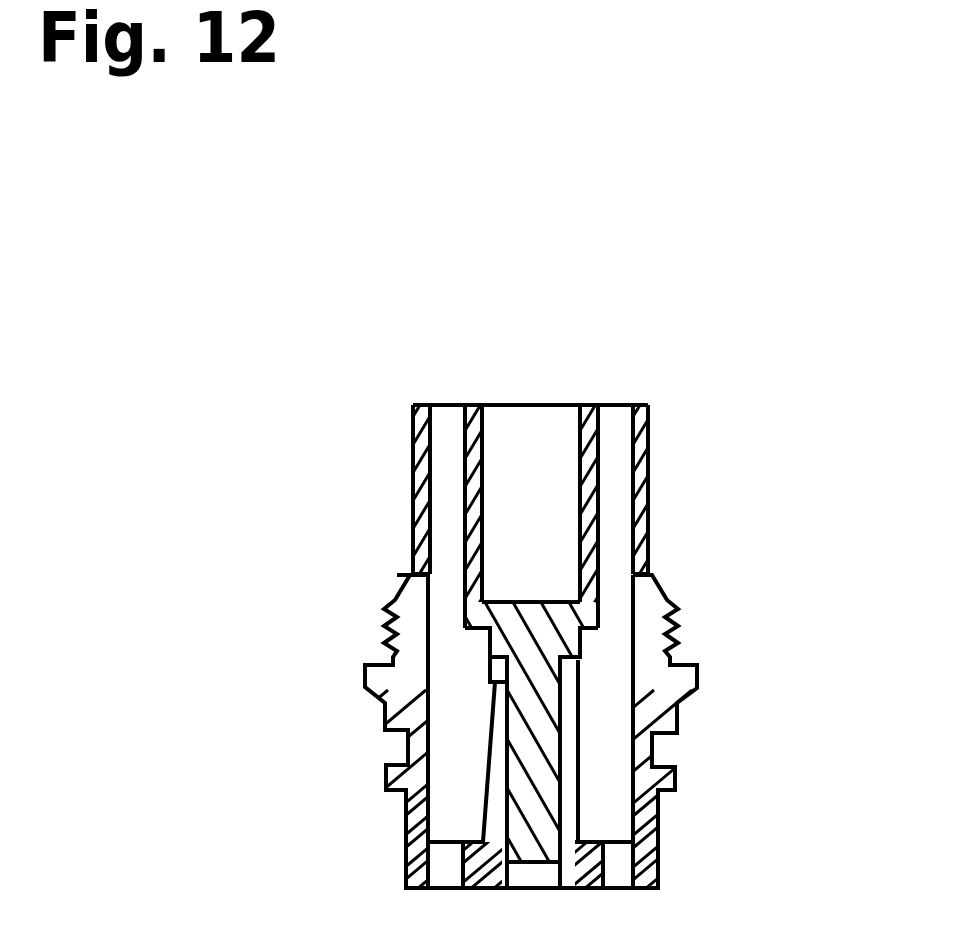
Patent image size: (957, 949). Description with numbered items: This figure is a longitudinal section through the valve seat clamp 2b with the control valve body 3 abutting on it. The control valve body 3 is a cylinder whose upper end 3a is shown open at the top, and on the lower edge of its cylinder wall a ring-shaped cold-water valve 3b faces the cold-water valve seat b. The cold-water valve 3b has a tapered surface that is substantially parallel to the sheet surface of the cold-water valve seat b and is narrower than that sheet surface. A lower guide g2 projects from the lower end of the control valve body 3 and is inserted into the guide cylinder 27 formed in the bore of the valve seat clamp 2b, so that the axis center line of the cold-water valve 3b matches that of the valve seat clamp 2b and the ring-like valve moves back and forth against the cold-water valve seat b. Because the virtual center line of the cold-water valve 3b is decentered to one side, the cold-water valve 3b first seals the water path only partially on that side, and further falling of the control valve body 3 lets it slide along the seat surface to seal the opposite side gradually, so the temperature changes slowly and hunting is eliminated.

The control valve body 3 is at (687, 460).
The upper end portion of socket member 3a is at (645, 406).
The cold-water valve 3b is at (633, 578).
The cold-water valve seat b is at (413, 572).
The lower guide g2 is at (540, 687).
The guide cylinder 27 is at (492, 764).
The valve seat clamp 2b is at (697, 757).